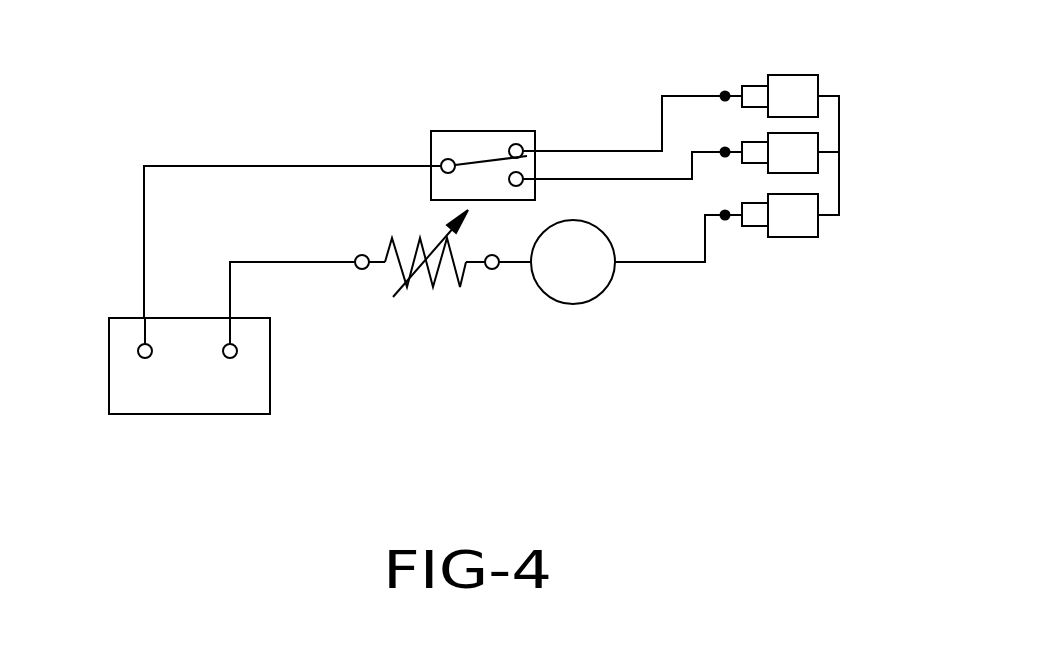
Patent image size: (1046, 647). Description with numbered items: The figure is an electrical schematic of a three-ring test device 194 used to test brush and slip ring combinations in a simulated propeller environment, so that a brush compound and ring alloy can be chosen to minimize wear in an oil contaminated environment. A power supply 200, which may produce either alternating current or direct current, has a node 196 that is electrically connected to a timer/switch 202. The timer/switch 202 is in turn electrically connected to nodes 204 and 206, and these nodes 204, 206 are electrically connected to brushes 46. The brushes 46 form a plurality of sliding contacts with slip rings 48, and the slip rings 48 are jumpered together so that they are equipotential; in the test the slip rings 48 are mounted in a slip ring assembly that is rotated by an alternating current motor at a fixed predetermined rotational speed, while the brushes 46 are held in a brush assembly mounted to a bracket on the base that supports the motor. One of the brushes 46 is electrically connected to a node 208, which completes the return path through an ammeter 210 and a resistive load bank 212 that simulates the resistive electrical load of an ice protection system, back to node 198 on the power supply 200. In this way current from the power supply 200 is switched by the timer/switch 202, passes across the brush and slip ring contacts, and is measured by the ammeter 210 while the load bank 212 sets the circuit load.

The three-ring test device 194 is at (270, 76).
The node 196 is at (138, 357).
The node 198 is at (237, 356).
The power supply 200 is at (191, 414).
The timer/switch 202 is at (483, 131).
The node 204 is at (723, 94).
The node 206 is at (725, 156).
The node 208 is at (726, 220).
The ammeter 210 is at (605, 292).
The resistive load bank 212 is at (463, 278).
The brushes 46 is at (748, 86).
The slip rings 48 is at (797, 75).